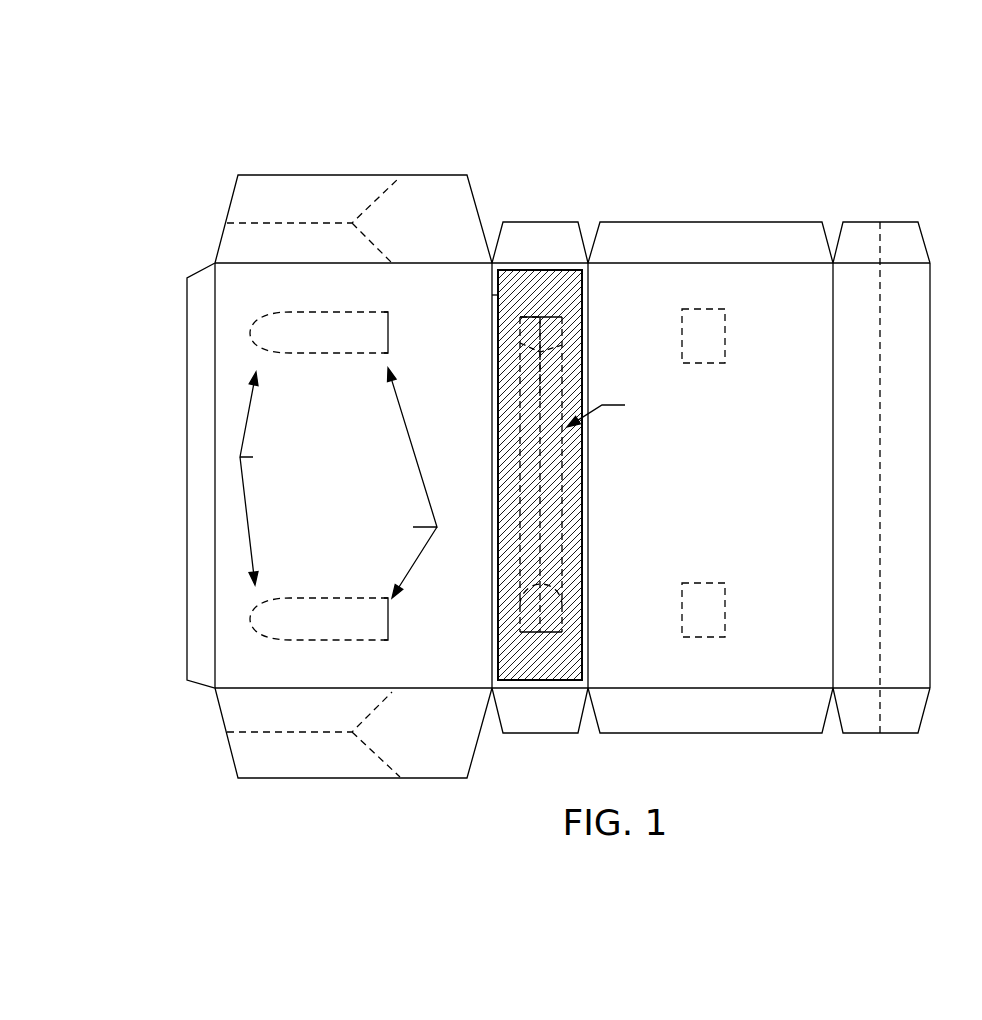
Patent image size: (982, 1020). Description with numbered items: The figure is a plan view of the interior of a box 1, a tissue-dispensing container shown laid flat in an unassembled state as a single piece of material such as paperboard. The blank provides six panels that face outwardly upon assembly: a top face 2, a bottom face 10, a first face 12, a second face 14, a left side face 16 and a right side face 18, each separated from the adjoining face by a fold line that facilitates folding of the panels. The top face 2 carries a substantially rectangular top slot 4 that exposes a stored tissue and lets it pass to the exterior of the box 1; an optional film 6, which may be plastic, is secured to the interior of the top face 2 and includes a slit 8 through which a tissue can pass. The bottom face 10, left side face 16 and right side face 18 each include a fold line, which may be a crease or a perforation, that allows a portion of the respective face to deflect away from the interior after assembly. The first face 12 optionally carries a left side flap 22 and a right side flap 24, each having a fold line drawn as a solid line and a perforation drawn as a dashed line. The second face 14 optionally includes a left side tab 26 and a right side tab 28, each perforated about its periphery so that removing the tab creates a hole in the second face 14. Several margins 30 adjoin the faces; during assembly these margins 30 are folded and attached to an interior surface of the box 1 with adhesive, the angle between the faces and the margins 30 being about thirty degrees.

The box 1 is at (128, 127).
The top face 2 is at (582, 318).
The top slot 4 is at (538, 350).
The film 6 is at (527, 325).
The slit 8 is at (540, 367).
The bottom face 10 is at (915, 367).
The first face 12 is at (228, 387).
The second face 14 is at (770, 658).
The left side face 16 is at (287, 767).
The right side face 18 is at (325, 192).
The left side flap 22 is at (294, 630).
The right side flap 24 is at (322, 343).
The left side tab 26 is at (703, 628).
The right side tab 28 is at (697, 340).
The margins 30 is at (778, 235).